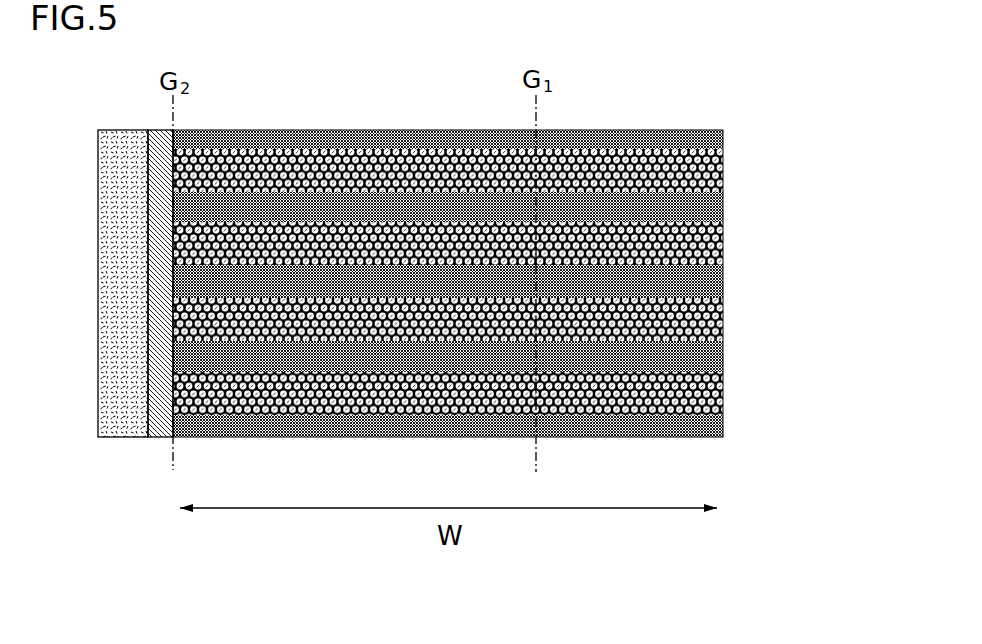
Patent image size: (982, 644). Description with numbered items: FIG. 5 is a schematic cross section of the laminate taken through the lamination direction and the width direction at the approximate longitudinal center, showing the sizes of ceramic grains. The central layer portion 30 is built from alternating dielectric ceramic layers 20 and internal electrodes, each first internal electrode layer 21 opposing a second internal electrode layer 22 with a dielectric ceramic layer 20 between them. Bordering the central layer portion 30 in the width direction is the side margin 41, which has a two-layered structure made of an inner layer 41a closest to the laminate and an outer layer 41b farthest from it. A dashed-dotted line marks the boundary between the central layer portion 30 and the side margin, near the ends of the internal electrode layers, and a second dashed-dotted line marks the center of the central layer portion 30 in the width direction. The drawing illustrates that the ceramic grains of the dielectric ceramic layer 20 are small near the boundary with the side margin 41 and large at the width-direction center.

The dielectric ceramic layer 20 is at (375, 150).
The first internal electrode layer 21 is at (180, 206).
The second internal electrode layer 22 is at (180, 279).
The central layer portion 30 is at (384, 239).
The side margin 41 is at (114, 338).
The inner layer 41a is at (114, 437).
The outer layer 41b is at (162, 437).